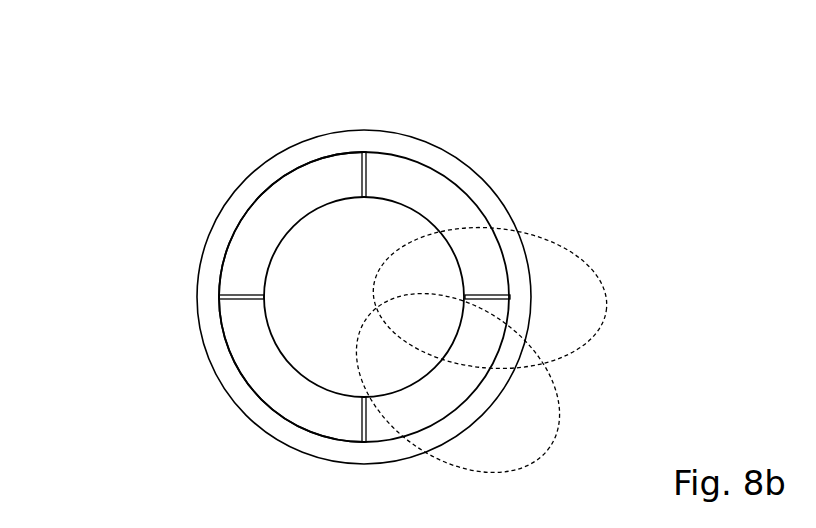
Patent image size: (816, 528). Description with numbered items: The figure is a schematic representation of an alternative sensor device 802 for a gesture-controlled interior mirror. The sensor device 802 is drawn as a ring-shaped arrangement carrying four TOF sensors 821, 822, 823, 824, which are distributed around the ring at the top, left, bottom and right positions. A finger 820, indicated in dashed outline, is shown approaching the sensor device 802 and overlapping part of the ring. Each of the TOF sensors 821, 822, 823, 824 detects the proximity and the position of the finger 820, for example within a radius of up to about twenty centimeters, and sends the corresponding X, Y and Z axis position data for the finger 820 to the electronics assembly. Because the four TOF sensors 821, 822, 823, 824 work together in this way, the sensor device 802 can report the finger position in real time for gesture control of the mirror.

The sensor device 802 is at (97, 102).
The finger 820 is at (565, 410).
The TOF sensor 821 is at (447, 205).
The TOF sensor 822 is at (277, 207).
The TOF sensor 823 is at (265, 370).
The TOF sensor 824 is at (427, 393).